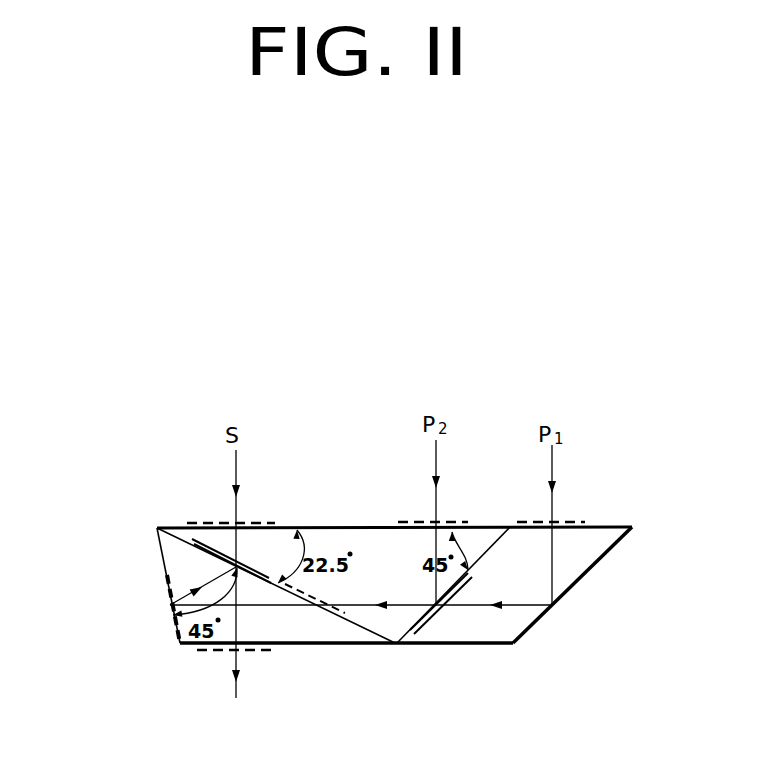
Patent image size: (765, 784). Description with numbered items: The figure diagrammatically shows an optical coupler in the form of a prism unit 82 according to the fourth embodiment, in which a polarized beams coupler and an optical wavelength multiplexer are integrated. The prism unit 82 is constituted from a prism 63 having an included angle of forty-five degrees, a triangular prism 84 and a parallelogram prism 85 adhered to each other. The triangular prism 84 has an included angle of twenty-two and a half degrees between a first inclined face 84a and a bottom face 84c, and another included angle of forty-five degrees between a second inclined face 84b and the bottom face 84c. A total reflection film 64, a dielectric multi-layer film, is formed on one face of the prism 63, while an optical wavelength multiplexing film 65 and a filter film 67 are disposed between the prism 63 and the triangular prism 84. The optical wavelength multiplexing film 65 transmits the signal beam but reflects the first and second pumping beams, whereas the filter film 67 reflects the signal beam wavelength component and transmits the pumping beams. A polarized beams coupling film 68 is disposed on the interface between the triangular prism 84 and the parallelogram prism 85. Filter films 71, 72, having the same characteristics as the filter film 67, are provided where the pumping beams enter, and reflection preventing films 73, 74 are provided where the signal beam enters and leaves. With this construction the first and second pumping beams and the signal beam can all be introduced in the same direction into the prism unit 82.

The prism unit 82 is at (341, 523).
The triangular prism 84 is at (341, 545).
The first inclined face 84a is at (168, 541).
The second inclined face 84b is at (504, 525).
The bottom face 84c is at (316, 528).
The parallelogram prism 85 is at (600, 548).
The reflection preventing film 73 is at (195, 522).
The reflection preventing film 74 is at (200, 651).
The filter film 71 is at (570, 522).
The filter film 72 is at (448, 522).
The optical wavelength multiplexing film 65 is at (259, 566).
The total reflection film 64 is at (160, 578).
The prism 63 is at (315, 635).
The filter film 67 is at (353, 616).
The polarized beams coupling film 68 is at (434, 620).